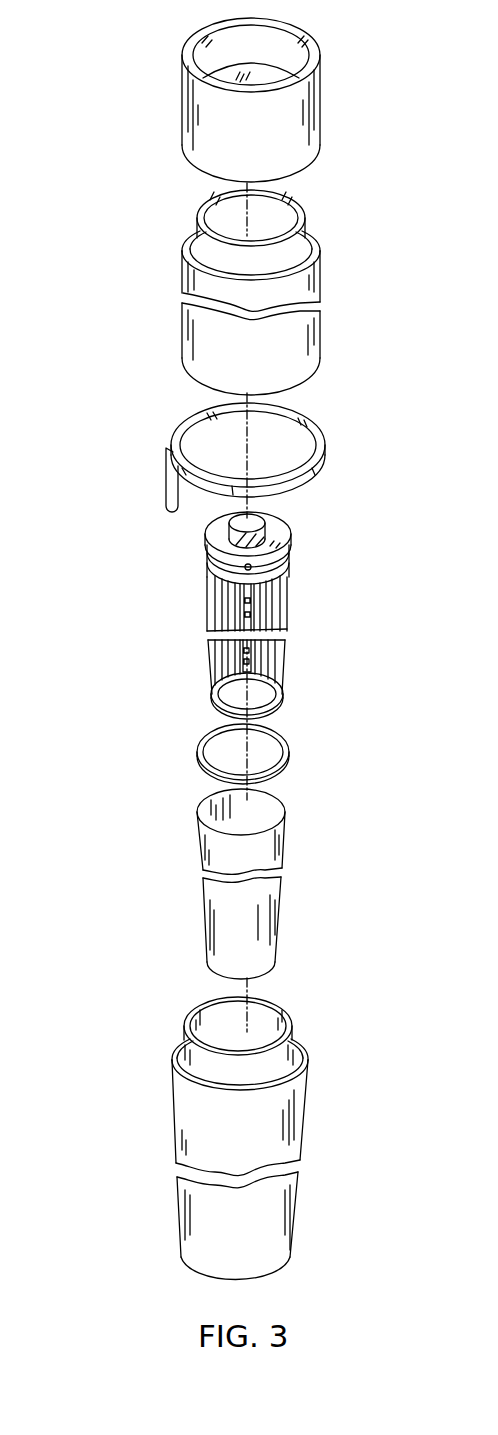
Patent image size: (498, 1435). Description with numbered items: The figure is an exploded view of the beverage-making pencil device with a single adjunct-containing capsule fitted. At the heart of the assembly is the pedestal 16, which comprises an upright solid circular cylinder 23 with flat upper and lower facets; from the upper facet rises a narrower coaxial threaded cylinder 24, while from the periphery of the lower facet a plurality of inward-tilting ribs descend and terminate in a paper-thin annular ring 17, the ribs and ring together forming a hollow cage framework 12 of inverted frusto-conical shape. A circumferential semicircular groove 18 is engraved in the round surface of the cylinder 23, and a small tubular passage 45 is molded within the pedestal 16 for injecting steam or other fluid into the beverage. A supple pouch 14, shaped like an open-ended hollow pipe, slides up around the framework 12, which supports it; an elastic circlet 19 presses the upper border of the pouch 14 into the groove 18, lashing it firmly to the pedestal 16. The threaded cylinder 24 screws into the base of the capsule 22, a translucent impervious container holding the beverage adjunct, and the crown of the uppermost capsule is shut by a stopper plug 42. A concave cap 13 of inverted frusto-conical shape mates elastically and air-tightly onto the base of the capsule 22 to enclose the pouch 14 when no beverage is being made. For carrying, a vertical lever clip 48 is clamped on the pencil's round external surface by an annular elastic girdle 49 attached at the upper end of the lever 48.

The hollow cage framework 12 is at (290, 687).
The concave cap 13 is at (302, 1130).
The supple pouch 14 is at (260, 960).
The pedestal 16 is at (242, 571).
The annular ring 17 is at (283, 708).
The groove 18 is at (260, 578).
The elastic circlet 19 is at (289, 757).
The capsule 22 is at (290, 293).
The solid circular cylinder 23 is at (280, 560).
The second narrower circular solid cylinder 24 is at (262, 523).
The stopper plug 42 is at (277, 143).
The tubular passage 45 is at (252, 568).
The lever clip 48 is at (167, 478).
The annular elastic girdle 49 is at (308, 422).